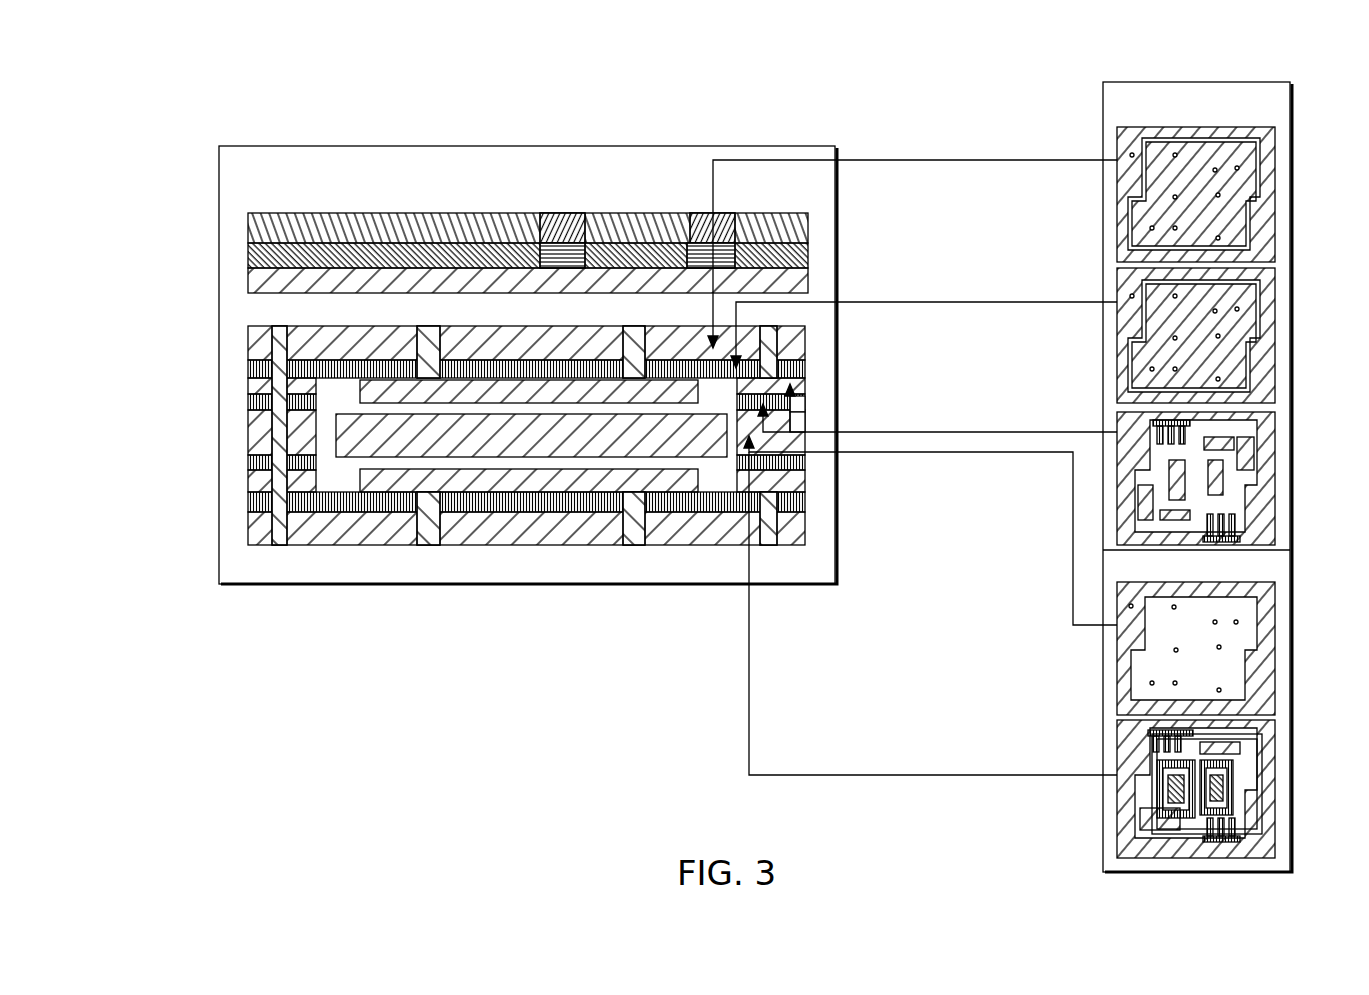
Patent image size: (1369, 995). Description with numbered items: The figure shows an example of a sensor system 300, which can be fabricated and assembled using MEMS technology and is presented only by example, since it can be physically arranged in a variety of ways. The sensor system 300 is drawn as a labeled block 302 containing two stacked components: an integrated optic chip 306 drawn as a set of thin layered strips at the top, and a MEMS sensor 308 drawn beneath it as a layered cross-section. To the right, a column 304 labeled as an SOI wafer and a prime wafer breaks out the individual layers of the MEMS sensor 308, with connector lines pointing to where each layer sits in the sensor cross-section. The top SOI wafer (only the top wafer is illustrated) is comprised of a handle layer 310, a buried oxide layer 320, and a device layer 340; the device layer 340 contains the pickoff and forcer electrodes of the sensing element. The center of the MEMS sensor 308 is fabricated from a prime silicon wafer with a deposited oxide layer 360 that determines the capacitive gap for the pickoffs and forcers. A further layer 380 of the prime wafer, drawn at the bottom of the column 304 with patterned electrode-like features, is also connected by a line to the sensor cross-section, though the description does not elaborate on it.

The sensor system 300 is at (145, 50).
The sensor system 302 is at (422, 146).
The wafer stack 304 is at (1200, 82).
The integrated optic chip 306 is at (248, 213).
The MEMS sensor 308 is at (270, 327).
The handle layer 310 is at (1276, 188).
The buried oxide layer 320 is at (1276, 326).
The device layer 340 is at (1276, 466).
The deposited oxide layer 360 is at (1276, 635).
The prime wafer device layer 380 is at (1276, 775).